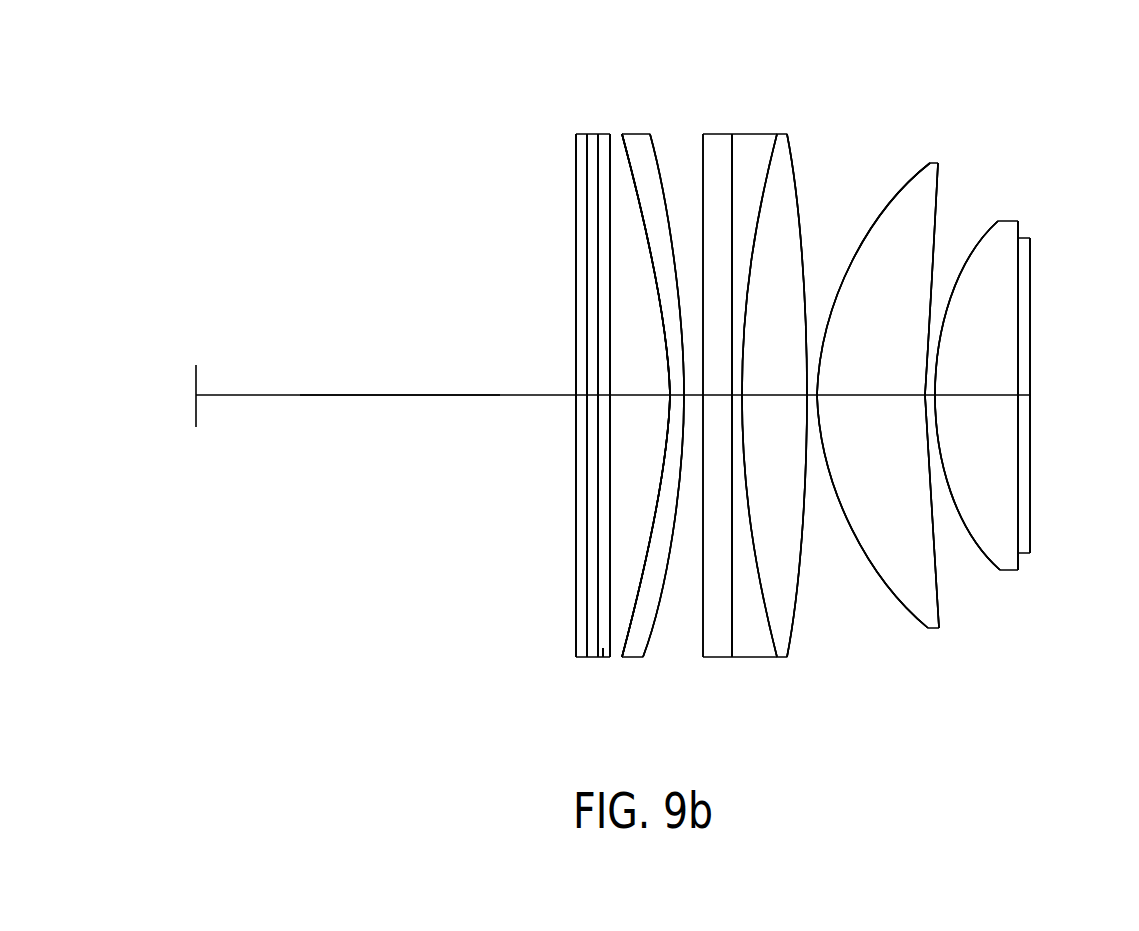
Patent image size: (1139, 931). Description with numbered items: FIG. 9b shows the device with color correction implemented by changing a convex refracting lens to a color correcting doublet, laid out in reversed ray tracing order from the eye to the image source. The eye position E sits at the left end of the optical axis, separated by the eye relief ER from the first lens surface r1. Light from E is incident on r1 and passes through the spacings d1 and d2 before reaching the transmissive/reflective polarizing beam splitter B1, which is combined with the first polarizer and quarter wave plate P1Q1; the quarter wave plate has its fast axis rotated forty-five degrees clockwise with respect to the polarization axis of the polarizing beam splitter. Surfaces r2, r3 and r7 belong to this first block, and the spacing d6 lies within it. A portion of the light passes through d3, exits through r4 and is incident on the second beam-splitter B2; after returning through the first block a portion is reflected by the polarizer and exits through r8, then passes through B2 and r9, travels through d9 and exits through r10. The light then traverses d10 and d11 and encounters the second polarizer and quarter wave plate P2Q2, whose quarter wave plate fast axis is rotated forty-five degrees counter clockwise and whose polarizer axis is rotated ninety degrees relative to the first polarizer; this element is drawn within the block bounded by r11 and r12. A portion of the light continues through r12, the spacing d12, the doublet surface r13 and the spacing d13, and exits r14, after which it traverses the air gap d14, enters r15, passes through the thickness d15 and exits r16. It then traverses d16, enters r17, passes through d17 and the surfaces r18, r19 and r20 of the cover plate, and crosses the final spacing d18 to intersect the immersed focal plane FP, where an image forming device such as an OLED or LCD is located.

The eye position E is at (608, 417).
The eye relief ER is at (393, 395).
The focal plane FP is at (1060, 395).
The first surface radius of curvature r1 is at (575, 168).
The second surface radius of curvature r2 is at (586, 205).
The third surface radius of curvature r3 is at (600, 133).
The fourth surface radius of curvature r4 is at (603, 657).
The seventh surface radius of curvature r7 is at (604, 395).
The eighth surface radius of curvature r8 is at (640, 145).
The ninth surface radius of curvature r9 is at (646, 395).
The tenth surface radius of curvature r10 is at (652, 633).
The eleventh surface radius of curvature r11 is at (702, 133).
The twelfth surface radius of curvature r12 is at (733, 633).
The thirteenth surface radius of curvature r13 is at (780, 613).
The fourteenth surface radius of curvature r14 is at (798, 567).
The fifteenth surface radius of curvature r15 is at (905, 605).
The sixteenth surface radius of curvature r16 is at (939, 607).
The seventeenth surface radius of curvature r17 is at (978, 547).
The eighteenth surface radius of curvature r18 is at (1020, 560).
The nineteenth surface radius of curvature r19 is at (1018, 222).
The twentieth surface radius of curvature r20 is at (1033, 270).
The first spacing d1 is at (578, 465).
The second spacing d2 is at (590, 503).
The third spacing d3 is at (600, 553).
The sixth spacing d6 is at (633, 393).
The ninth spacing d9 is at (674, 350).
The tenth spacing d10 is at (693, 393).
The eleventh spacing d11 is at (717, 395).
The twelfth spacing d12 is at (748, 320).
The thirteenth spacing d13 is at (780, 395).
The fourteenth spacing d14 is at (833, 395).
The fifteenth spacing d15 is at (872, 395).
The sixteenth spacing d16 is at (933, 395).
The seventeenth spacing d17 is at (965, 395).
The eighteenth spacing d18 is at (1025, 353).
The first polarizer and quarter wave plate P1Q1 is at (600, 133).
The second polarizer and quarter wave plate P2Q2 is at (733, 133).
The first beam splitter B1 is at (597, 633).
The second beam splitter B2 is at (622, 657).